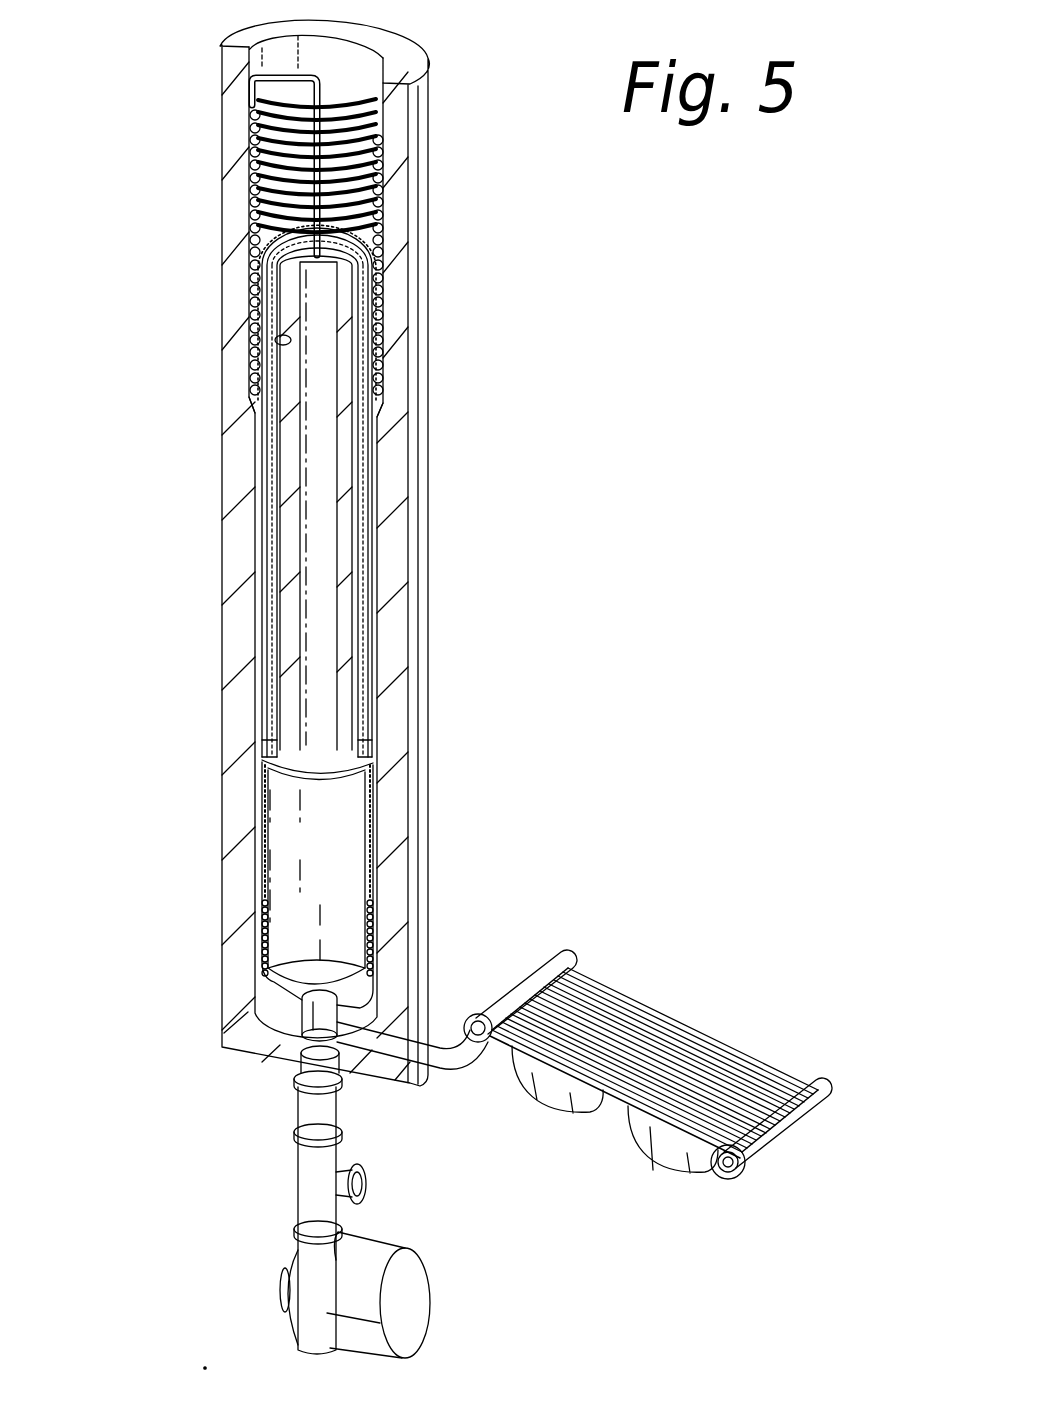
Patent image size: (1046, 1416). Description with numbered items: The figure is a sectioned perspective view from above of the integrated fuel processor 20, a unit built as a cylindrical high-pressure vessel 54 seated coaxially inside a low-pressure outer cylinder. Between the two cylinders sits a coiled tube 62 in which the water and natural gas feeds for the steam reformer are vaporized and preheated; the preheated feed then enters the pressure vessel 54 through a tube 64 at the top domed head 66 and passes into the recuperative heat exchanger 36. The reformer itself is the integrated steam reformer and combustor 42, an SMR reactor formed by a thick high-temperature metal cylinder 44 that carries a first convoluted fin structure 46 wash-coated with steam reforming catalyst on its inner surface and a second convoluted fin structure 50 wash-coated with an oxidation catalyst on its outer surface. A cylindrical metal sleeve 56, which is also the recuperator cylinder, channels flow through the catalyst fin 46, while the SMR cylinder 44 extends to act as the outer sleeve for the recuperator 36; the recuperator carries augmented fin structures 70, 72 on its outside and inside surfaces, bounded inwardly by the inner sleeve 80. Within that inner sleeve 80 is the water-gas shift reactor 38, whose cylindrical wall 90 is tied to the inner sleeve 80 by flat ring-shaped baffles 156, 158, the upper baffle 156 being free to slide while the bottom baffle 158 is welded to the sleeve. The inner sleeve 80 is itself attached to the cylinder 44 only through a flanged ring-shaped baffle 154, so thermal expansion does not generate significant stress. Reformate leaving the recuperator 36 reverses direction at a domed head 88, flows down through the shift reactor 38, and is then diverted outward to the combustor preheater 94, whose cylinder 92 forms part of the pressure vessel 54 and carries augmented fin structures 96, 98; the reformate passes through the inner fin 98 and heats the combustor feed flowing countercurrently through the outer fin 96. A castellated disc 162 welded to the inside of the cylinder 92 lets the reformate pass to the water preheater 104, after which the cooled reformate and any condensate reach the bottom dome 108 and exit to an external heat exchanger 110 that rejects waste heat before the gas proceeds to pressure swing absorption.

The fuel processor 20 is at (510, 414).
The recuperative heat exchanger 36 is at (393, 277).
The water-gas shift reactor 38 is at (353, 356).
The integrated steam reformer and combustor 42 is at (403, 522).
The metal cylinder 44 is at (373, 622).
The first convoluted fin structure 46 is at (266, 540).
The second convoluted fin structure 50 is at (260, 492).
The pressure vessel 54 is at (386, 959).
The cylindrical metal sleeve 56 is at (288, 338).
The coiled tube 62 is at (392, 127).
The tube 64 is at (320, 92).
The top domed head 66 is at (385, 210).
The augmented fin structure 70 is at (270, 292).
The augmented fin structure 72 is at (250, 358).
The inner sleeve 80 is at (253, 233).
The domed head 88 is at (383, 238).
The cylindrical wall 90 is at (300, 668).
The cylinder 92 is at (375, 878).
The combustor preheater 94 is at (245, 842).
The augmented fin structure 96 is at (258, 802).
The augmented fin structure 98 is at (253, 827).
The water preheater 104 is at (248, 932).
The bottom dome 108 is at (320, 972).
The heat exchanger 110 is at (768, 1045).
The flanged ring-shaped baffle 154 is at (270, 758).
The ring-shaped baffle 156 is at (257, 218).
The ring-shaped baffle 158 is at (373, 835).
The castellated disc 162 is at (300, 1008).